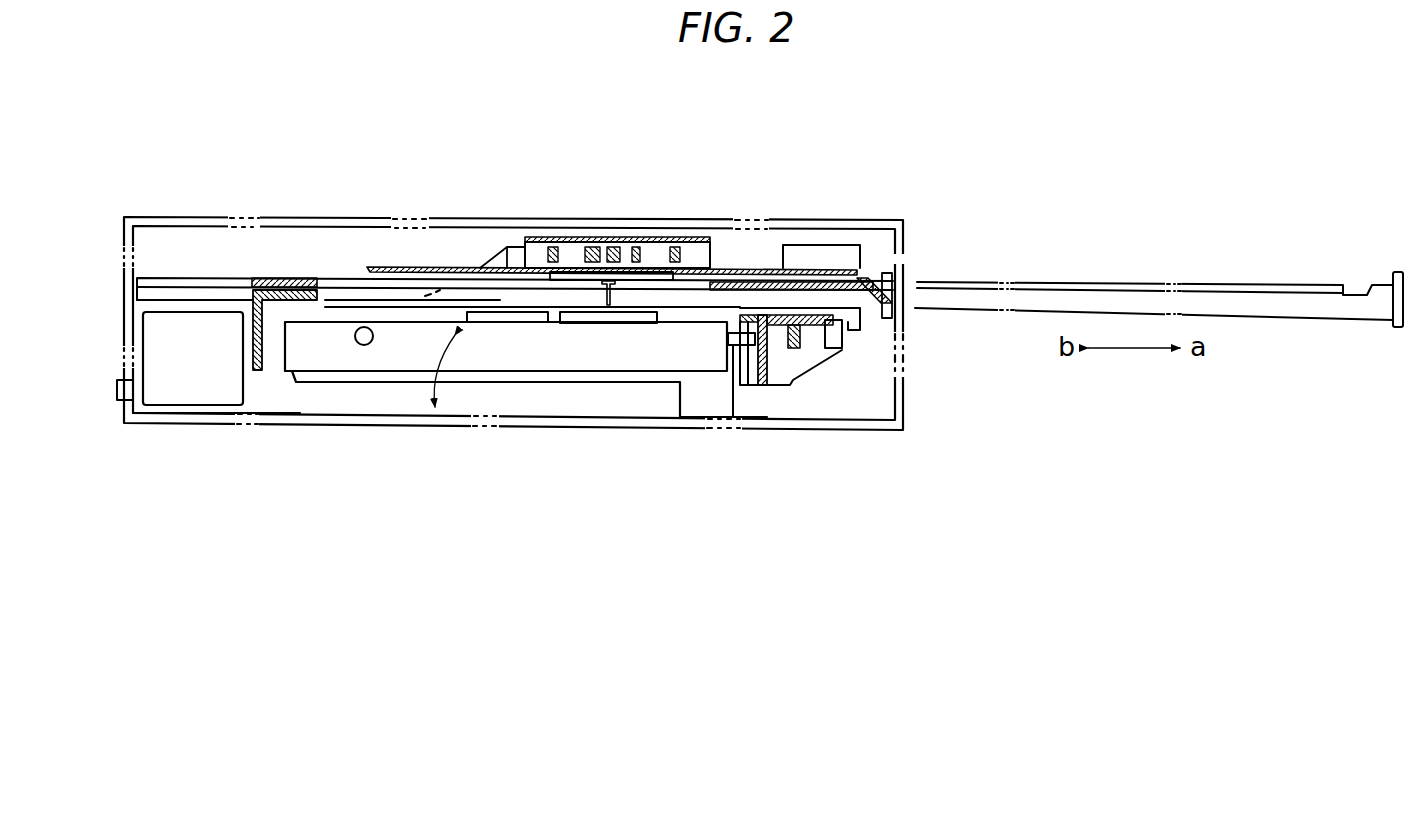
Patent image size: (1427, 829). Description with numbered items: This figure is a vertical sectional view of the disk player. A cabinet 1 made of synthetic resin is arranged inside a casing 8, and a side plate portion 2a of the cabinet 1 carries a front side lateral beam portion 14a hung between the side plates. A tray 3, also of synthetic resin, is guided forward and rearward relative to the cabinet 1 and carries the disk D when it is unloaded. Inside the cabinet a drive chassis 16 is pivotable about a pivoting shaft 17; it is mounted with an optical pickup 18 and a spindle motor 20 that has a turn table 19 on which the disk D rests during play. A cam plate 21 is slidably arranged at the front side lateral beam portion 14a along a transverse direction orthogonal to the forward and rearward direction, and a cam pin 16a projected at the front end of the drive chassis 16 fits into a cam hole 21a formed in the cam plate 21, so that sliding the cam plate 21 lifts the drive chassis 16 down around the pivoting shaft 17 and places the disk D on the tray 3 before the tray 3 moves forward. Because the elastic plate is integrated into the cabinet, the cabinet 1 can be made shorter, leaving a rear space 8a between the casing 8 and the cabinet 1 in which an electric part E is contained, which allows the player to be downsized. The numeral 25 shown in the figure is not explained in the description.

The cabinet 1 is at (333, 395).
The side plate portion 2a is at (487, 265).
The tray 3 is at (878, 305).
The casing 8 is at (287, 217).
The rear space 8a is at (252, 395).
The front side lateral beam portion 14a is at (826, 330).
The drive chassis 16 is at (413, 352).
The cam pin 16a is at (735, 340).
The pivoting shaft 17 is at (366, 345).
The optical pickup 18 is at (516, 322).
The turn table 19 is at (563, 285).
The spindle motor 20 is at (608, 305).
The cam plate 21 is at (748, 390).
The cam hole 21a is at (742, 390).
The objective lens actuator 25 is at (652, 240).
The disk D is at (760, 268).
The electric part E is at (186, 400).